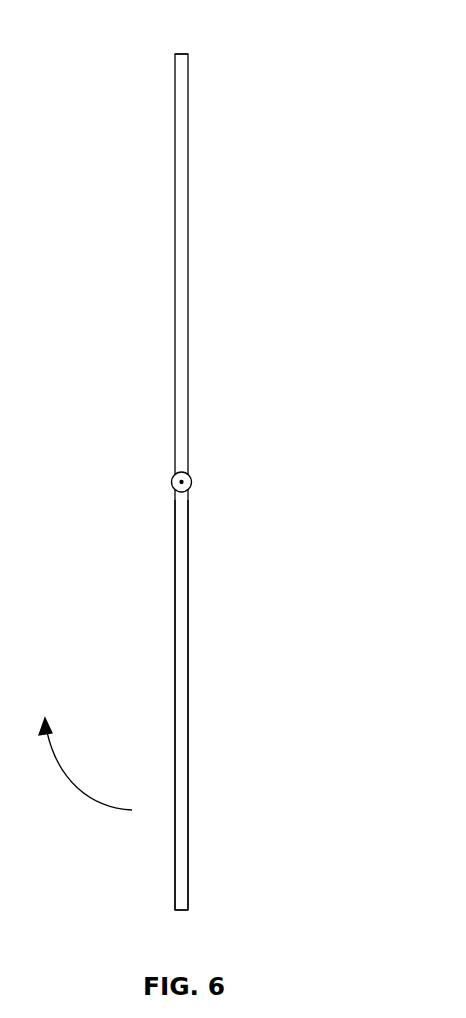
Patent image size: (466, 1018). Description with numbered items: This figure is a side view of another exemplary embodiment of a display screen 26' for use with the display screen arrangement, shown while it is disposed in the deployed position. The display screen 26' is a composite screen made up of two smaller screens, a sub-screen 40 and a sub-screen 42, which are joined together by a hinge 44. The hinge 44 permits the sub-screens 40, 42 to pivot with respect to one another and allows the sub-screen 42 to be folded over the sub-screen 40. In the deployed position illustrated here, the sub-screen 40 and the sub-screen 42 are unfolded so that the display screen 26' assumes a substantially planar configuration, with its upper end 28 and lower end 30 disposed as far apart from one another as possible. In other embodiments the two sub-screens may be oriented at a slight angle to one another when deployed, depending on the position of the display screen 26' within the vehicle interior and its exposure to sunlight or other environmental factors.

The display screen 26' is at (301, 339).
The upper end 28 is at (182, 52).
The lower end 30 is at (180, 912).
The sub-screen 40 is at (174, 268).
The sub-screen 42 is at (188, 697).
The hinge 44 is at (192, 488).